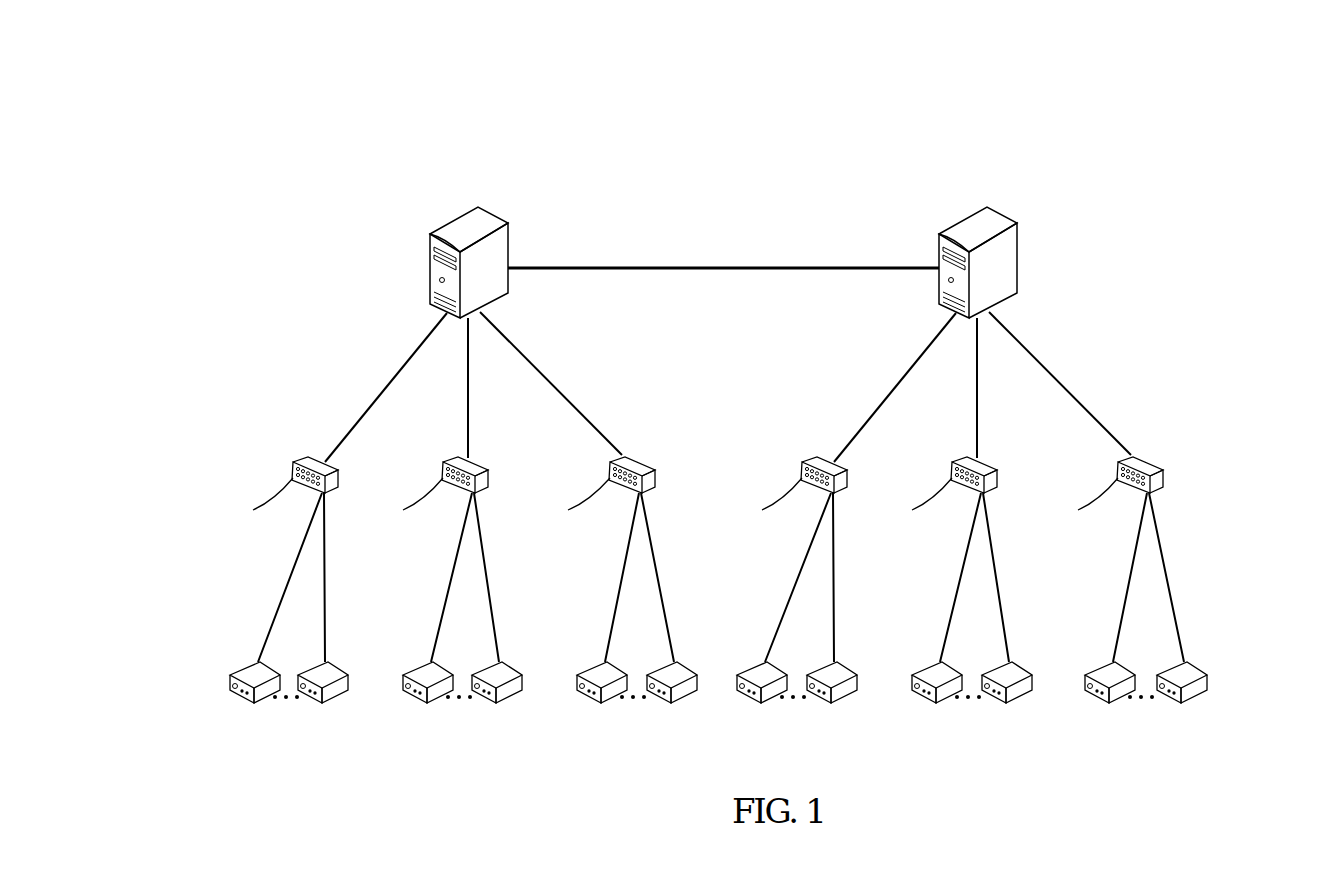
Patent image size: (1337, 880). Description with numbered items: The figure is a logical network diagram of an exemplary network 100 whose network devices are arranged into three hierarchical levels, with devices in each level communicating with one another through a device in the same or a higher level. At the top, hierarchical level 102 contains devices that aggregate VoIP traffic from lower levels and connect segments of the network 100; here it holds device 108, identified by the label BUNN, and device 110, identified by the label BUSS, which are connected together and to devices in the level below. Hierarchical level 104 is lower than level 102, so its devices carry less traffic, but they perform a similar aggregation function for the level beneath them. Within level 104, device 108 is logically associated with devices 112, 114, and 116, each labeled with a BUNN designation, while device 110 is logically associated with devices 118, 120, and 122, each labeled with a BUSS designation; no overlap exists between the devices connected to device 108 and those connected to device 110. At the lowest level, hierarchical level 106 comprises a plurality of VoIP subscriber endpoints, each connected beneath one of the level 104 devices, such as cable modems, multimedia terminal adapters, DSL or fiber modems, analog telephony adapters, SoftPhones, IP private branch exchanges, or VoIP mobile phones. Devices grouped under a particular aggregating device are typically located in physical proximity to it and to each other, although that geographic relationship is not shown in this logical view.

The network 100 is at (800, 104).
The hierarchical level 102 is at (1233, 264).
The hierarchical level 104 is at (1233, 471).
The hierarchical level 106 is at (1233, 671).
The device 108 is at (508, 238).
The device 110 is at (1017, 256).
The device 112 is at (303, 456).
The device 114 is at (478, 463).
The device 116 is at (642, 462).
The device 118 is at (810, 455).
The device 120 is at (988, 463).
The device 122 is at (1150, 462).